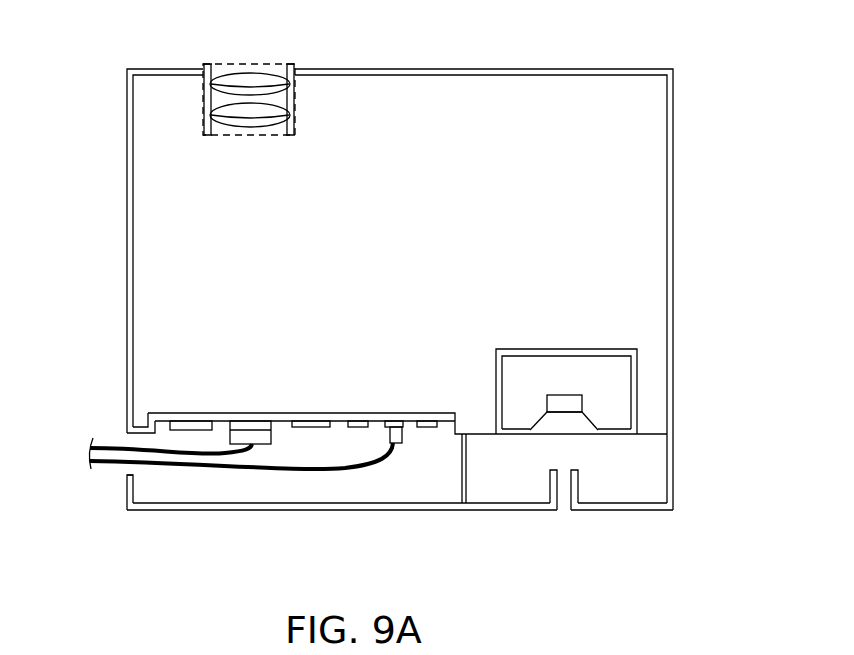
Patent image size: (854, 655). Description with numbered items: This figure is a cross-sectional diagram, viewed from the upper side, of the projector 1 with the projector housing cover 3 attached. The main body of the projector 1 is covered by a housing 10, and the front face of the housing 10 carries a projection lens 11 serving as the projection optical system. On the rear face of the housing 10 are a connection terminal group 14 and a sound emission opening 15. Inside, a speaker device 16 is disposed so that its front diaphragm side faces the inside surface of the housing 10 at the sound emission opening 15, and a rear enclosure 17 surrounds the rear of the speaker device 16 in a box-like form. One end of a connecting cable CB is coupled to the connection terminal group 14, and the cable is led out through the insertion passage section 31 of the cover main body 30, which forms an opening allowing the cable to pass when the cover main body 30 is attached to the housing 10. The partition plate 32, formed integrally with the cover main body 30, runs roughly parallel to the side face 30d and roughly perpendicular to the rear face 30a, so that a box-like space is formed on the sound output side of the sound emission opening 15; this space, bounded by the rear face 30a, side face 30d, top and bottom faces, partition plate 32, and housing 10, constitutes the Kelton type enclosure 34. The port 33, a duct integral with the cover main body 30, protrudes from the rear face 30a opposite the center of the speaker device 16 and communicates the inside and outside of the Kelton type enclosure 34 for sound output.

The projector 1 is at (127, 164).
The housing 10 is at (127, 228).
The projection lens 11 is at (256, 69).
The connection terminal group 14 is at (455, 403).
The sound emission opening 15 is at (577, 436).
The speaker device 16 is at (593, 414).
The rear enclosure 17 is at (607, 349).
The connecting cable CB is at (112, 446).
The projector housing cover 3 is at (238, 511).
The cover main body 30 is at (311, 511).
The rear face 30a is at (380, 511).
The side face 30d is at (675, 473).
The insertion passage section 31 is at (128, 473).
The partition plate 32 is at (468, 488).
The port 33 is at (566, 490).
The Kelton type enclosure 34 is at (630, 511).